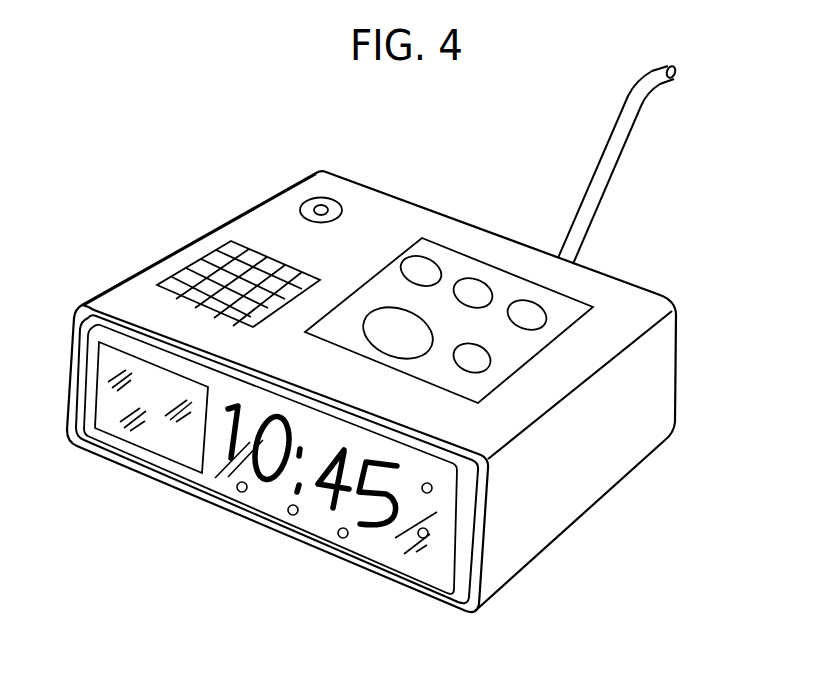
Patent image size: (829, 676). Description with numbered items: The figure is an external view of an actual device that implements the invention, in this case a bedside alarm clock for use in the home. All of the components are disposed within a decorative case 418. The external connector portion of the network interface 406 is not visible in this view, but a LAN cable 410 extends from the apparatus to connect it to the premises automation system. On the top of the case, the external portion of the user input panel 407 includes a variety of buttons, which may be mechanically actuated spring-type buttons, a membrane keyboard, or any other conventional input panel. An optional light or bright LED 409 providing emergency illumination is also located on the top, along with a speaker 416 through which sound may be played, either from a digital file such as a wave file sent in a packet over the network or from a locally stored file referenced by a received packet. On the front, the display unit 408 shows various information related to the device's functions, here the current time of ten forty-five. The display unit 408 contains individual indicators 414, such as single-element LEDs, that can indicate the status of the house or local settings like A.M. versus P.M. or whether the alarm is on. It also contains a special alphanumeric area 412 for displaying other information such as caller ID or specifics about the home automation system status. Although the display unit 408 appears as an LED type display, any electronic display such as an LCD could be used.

The network interface external connector portion 406 is at (392, 391).
The user input panel external portion 407 is at (590, 308).
The display unit 408 is at (433, 513).
The light or bright LED 409 is at (311, 200).
The LAN cable 410 is at (607, 140).
The alphanumeric area 412 is at (140, 447).
The individual indicators 414 is at (288, 513).
The speaker 416 is at (175, 272).
The decorative case 418 is at (178, 249).